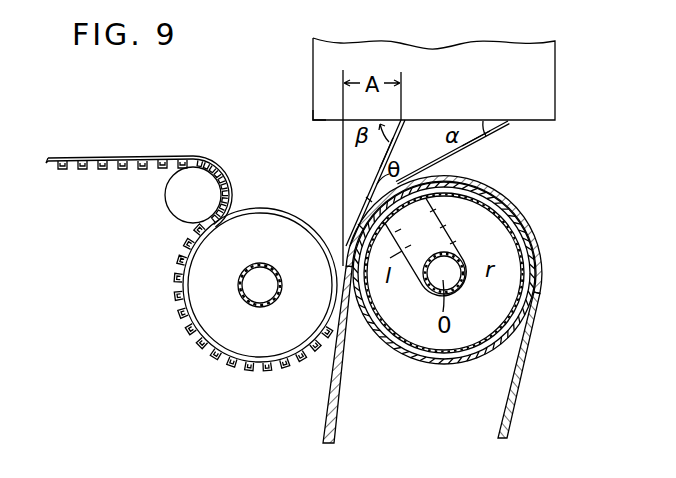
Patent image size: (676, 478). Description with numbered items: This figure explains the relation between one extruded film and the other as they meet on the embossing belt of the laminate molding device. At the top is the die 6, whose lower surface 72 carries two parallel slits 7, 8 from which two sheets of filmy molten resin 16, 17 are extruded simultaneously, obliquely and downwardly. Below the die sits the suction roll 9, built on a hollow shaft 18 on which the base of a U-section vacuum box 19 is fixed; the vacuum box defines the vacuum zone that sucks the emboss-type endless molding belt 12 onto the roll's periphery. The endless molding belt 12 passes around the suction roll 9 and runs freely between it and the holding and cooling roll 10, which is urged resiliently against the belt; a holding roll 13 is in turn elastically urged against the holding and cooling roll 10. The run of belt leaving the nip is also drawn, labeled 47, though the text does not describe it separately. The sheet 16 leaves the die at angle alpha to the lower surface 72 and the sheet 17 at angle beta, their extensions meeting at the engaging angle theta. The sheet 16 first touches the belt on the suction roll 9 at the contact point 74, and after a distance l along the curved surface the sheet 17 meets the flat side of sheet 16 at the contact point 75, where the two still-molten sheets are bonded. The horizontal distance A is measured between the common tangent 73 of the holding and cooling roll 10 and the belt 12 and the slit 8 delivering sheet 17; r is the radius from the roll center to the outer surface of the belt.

The die 6 is at (555, 93).
The slit 7 is at (515, 124).
The slit 8 is at (411, 122).
The suction roll 9 is at (503, 235).
The holding and cooling roll 10 is at (215, 337).
The endless molding belt 12 is at (525, 360).
The holding roll 13 is at (180, 205).
The filmy molten resin sheet 16 is at (474, 142).
The filmy molten resin sheet 17 is at (387, 153).
The hollow shaft 18 is at (462, 285).
The vacuum box 19 is at (448, 233).
The belt run 47 is at (340, 370).
The lower surface of the die 72 is at (323, 121).
The common tangent 73 is at (343, 157).
The contact point 74 is at (366, 197).
The contact point 75 is at (358, 224).